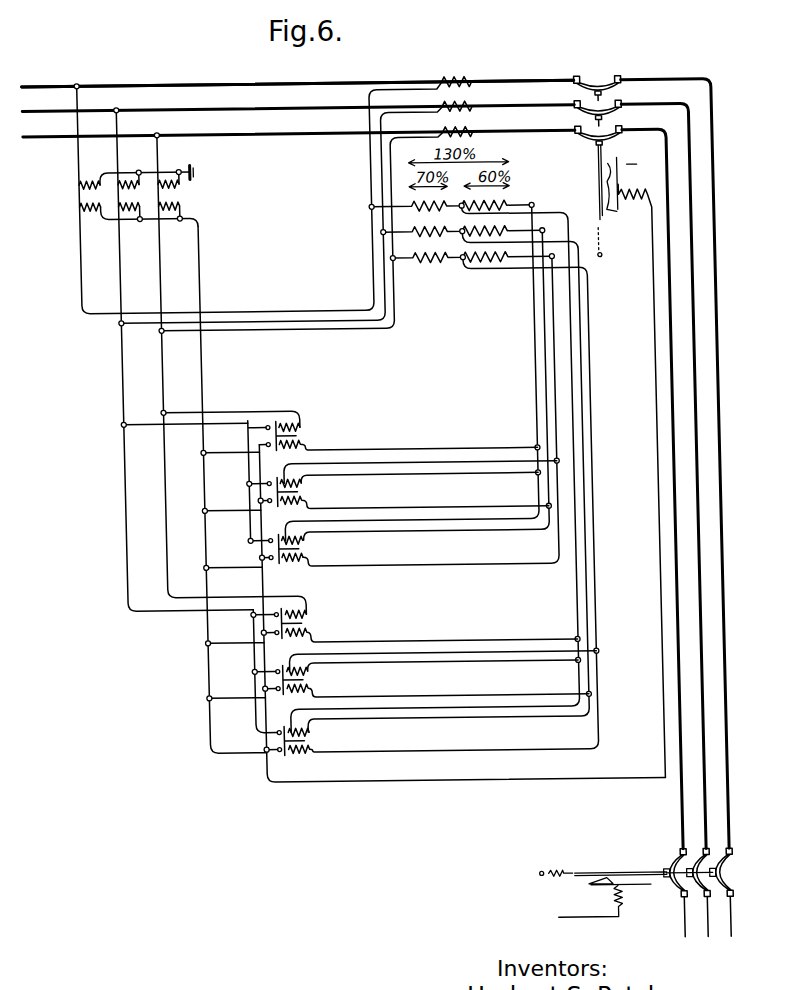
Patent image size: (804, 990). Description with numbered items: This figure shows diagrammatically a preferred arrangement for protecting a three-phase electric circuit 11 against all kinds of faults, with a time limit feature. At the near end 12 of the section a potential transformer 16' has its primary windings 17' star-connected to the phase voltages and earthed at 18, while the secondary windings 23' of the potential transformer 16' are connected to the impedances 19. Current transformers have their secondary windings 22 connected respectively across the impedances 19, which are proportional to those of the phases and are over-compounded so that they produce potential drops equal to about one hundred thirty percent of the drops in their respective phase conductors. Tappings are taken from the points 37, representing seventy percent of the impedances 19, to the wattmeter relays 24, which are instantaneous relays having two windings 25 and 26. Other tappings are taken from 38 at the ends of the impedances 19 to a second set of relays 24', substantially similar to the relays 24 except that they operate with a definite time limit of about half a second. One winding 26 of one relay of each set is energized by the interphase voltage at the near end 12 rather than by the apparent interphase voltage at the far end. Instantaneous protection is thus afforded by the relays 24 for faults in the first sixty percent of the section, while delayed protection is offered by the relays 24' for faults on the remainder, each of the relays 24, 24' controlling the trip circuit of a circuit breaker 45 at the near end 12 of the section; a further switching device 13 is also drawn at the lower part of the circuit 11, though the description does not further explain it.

The three-phase electric circuit 11 is at (317, 83).
The near end 12 is at (58, 181).
The line switch 13 is at (637, 906).
The potential transformer 16' is at (125, 198).
The primary windings 17' is at (142, 172).
The earth connection 18 is at (198, 163).
The impedances 19 is at (505, 206).
The secondary windings of current transformers 22 is at (479, 83).
The secondary windings of the potential transformer 23' is at (143, 202).
The instantaneous relays 24 is at (261, 682).
The time-limit relays 24' is at (256, 493).
The relay winding 25 is at (300, 443).
The relay winding 26 is at (439, 600).
The tapping points 37 is at (466, 205).
The end tappings 38 is at (537, 206).
The circuit breaker 45 is at (597, 143).